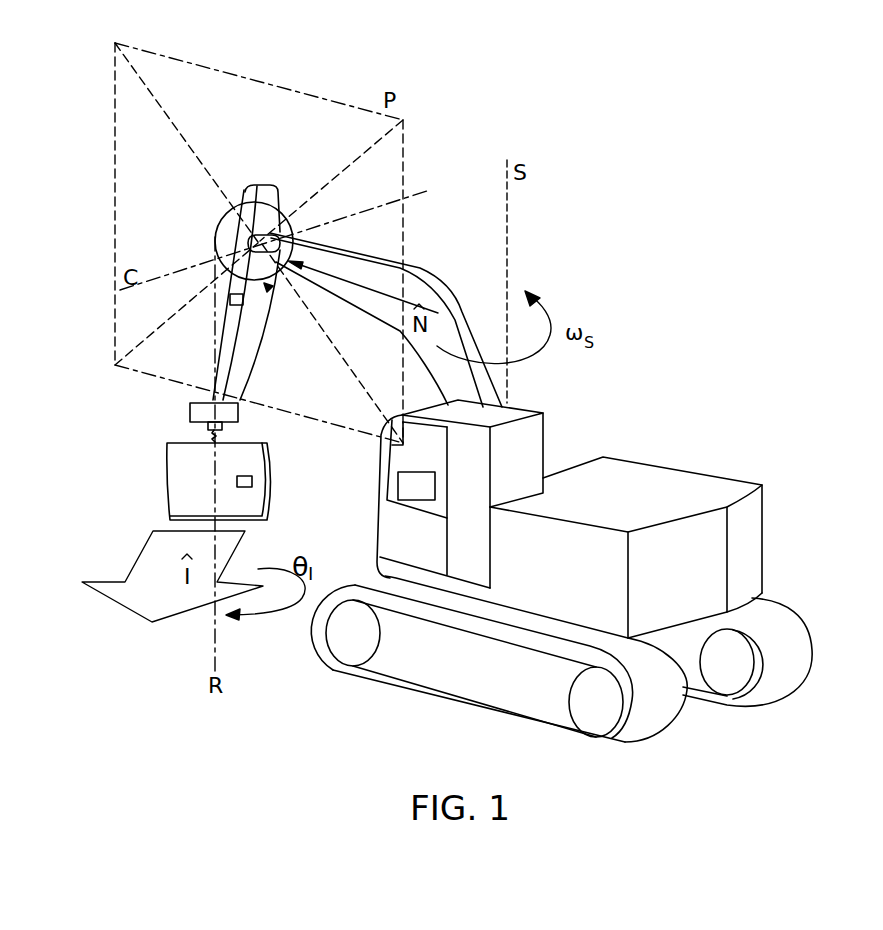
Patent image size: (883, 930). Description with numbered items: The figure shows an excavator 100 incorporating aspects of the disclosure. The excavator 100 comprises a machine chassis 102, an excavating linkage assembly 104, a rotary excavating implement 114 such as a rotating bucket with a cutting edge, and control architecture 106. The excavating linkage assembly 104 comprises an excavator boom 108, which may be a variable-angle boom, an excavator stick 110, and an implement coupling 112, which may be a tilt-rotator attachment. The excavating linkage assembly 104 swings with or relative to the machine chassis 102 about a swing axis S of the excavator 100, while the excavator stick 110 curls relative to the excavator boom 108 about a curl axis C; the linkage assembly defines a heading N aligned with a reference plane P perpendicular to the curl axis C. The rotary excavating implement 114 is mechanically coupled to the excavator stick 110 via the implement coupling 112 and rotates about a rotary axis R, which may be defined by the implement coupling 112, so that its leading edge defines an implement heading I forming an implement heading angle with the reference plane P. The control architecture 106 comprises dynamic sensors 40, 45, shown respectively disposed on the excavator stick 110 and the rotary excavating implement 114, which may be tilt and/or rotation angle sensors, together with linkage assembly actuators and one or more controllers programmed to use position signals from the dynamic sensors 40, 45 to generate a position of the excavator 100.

The excavator 100 is at (772, 407).
The machine chassis 102 is at (683, 468).
The excavating linkage assembly 104 is at (564, 278).
The control architecture 106 is at (422, 500).
The excavator boom 108 is at (432, 275).
The excavator stick 110 is at (248, 378).
The implement coupling 112 is at (190, 415).
The rotary excavating implement 114 is at (267, 507).
The dynamic sensor 40 is at (243, 300).
The dynamic sensor 45 is at (252, 481).